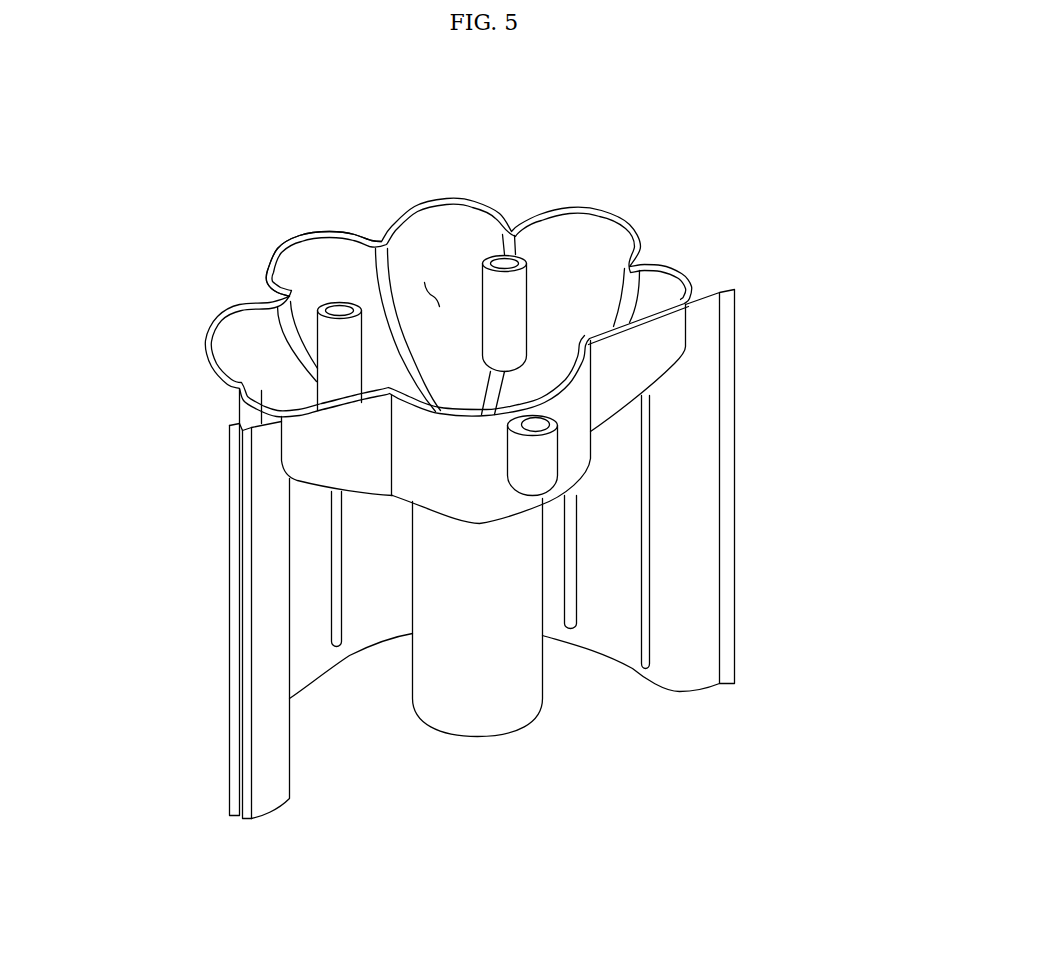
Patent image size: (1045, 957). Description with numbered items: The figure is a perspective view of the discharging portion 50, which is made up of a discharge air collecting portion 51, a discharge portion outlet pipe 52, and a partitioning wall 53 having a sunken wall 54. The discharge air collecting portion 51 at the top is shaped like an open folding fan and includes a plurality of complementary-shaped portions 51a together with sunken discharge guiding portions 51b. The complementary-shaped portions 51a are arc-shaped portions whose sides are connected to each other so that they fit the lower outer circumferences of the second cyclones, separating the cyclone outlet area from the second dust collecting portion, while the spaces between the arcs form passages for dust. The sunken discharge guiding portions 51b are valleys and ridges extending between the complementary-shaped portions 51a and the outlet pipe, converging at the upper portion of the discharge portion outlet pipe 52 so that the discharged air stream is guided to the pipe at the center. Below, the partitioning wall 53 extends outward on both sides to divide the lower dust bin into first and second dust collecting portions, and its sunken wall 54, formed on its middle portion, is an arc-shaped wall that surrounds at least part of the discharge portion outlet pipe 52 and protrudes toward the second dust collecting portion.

The discharging portion 50 is at (76, 93).
The discharge air collecting portion 51 is at (633, 233).
The complementary-shaped portions 51a is at (290, 240).
The sunken discharge guiding portions 51b is at (437, 280).
The discharge portion outlet pipe 52 is at (545, 700).
The partitioning wall 53 is at (727, 485).
The sunken wall 54 is at (375, 593).